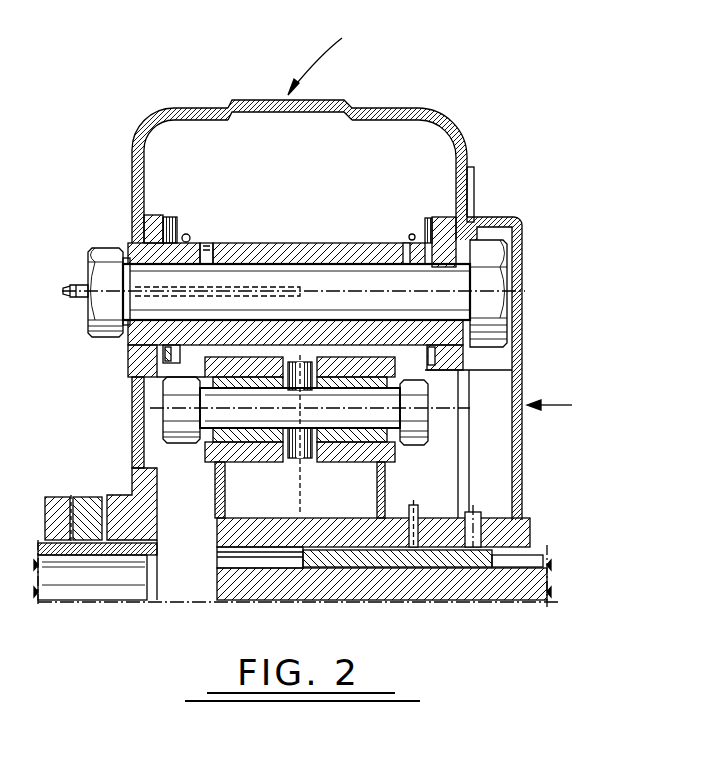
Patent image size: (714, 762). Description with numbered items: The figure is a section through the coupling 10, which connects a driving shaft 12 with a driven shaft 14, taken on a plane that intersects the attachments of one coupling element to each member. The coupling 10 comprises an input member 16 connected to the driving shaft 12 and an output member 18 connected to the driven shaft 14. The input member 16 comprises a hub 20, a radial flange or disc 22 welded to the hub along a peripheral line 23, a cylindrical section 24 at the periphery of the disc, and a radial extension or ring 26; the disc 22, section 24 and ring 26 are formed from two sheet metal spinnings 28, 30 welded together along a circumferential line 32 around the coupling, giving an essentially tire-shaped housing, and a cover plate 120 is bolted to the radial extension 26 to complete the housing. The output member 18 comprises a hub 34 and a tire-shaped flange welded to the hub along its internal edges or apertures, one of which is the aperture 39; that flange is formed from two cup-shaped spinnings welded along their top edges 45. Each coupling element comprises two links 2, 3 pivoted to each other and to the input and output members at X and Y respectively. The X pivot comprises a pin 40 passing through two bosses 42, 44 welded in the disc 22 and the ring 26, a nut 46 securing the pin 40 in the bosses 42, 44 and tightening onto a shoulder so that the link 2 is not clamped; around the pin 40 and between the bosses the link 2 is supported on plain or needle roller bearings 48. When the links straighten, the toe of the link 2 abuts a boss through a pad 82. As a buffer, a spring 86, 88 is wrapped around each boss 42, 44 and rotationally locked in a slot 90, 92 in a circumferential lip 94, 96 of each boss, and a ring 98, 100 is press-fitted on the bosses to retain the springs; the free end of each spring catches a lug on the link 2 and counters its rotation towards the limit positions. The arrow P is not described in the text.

The coupling 10 is at (331, 52).
The driving shaft 12 is at (78, 578).
The driven shaft 14 is at (372, 590).
The input member 16 is at (155, 553).
The output member 18 is at (398, 477).
The hub 20 is at (143, 498).
The radial flange or disc 22 is at (132, 392).
The peripheral line 23 is at (138, 478).
The cylindrical section 24 is at (375, 113).
The radial extension or ring 26 is at (455, 186).
The sheet metal spinning 28 is at (152, 118).
The sheet metal spinning 30 is at (449, 120).
The circumferential line 32 is at (232, 108).
The hub 34 is at (452, 520).
The internal edge or aperture 39 is at (382, 522).
The pin 40 is at (350, 283).
The boss 42 is at (152, 216).
The boss 44 is at (447, 214).
The top edges 45 is at (304, 484).
The nut 46 is at (103, 262).
The plain or needle roller bearings 48 is at (257, 265).
The pad 82 is at (408, 412).
The spring 86 is at (188, 234).
The spring 88 is at (410, 236).
The slot 90 is at (170, 218).
The slot 92 is at (427, 214).
The circumferential lip 94 is at (133, 372).
The circumferential lip 96 is at (466, 376).
The ring 98 is at (191, 238).
The ring 100 is at (405, 238).
The cover plate 120 is at (525, 377).
The link 2 is at (259, 243).
The link 3 is at (298, 360).
The X pivot X is at (513, 292).
The Y pivot Y is at (392, 420).
The direction arrow P is at (559, 403).